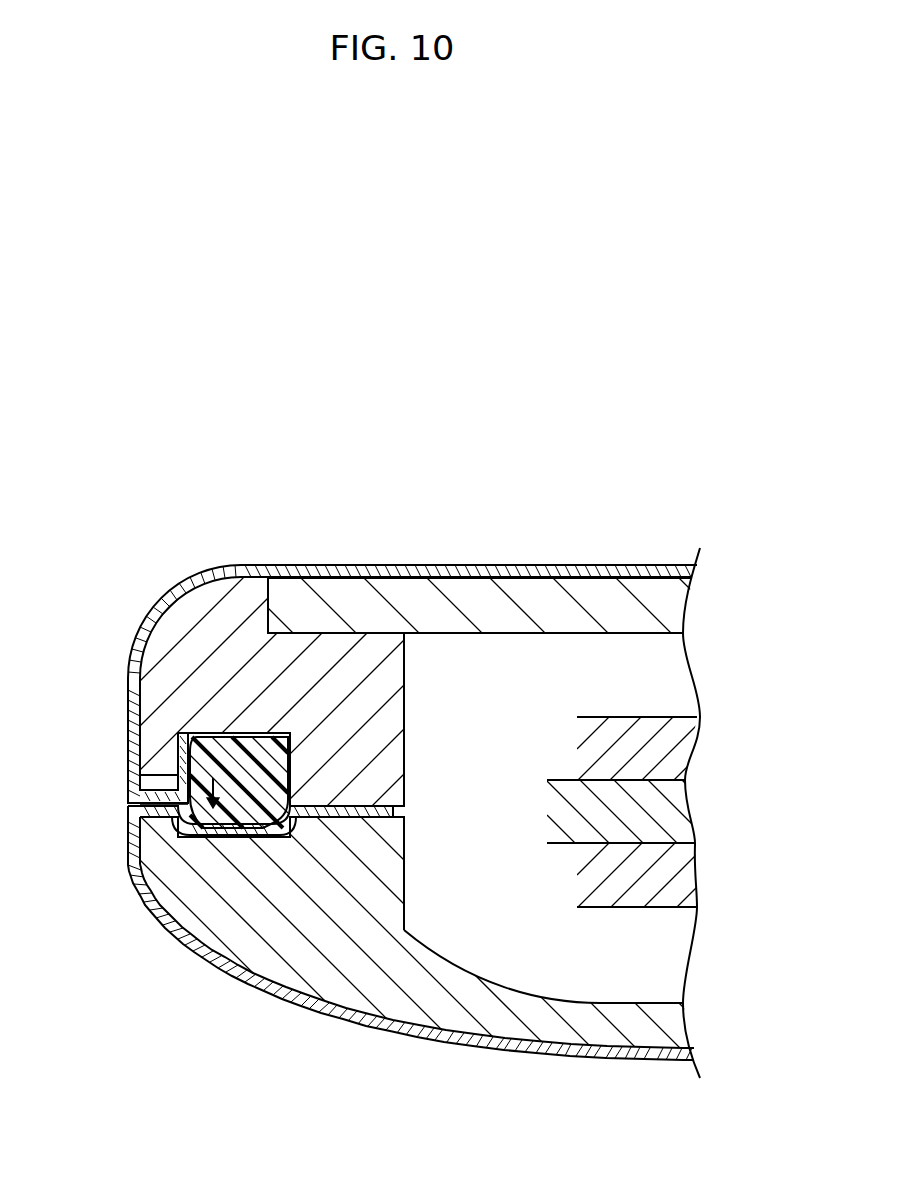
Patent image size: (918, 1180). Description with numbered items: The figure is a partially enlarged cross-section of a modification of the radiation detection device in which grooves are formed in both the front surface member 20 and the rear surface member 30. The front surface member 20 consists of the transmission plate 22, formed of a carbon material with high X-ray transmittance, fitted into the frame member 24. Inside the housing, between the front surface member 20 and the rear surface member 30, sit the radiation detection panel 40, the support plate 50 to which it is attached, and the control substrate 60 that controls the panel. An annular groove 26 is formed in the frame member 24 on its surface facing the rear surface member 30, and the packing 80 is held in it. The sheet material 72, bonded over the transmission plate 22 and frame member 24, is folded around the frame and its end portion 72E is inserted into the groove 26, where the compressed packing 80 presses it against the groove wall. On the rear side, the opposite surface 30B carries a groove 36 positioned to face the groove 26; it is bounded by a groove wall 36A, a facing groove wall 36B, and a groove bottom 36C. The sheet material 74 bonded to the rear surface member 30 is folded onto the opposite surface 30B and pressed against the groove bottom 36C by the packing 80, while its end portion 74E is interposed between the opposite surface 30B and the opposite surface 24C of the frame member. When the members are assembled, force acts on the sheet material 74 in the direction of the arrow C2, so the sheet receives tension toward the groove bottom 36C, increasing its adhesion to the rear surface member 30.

The front surface member 20 is at (418, 645).
The transmission plate 22 is at (370, 578).
The frame member 24 is at (319, 668).
The opposite surface 24C is at (352, 817).
The groove 26 is at (285, 748).
The rear surface member 30 is at (416, 927).
The opposite surface 30B is at (328, 802).
The groove 36 is at (272, 891).
The groove wall 36A is at (192, 838).
The groove wall 36B is at (347, 868).
The groove bottom 36C is at (258, 838).
The radiation detection panel 40 is at (657, 717).
The support plate 50 is at (660, 847).
The control substrate 60 is at (660, 907).
The sheet material 72 is at (374, 640).
The end portion 72E is at (183, 733).
The sheet material 74 is at (411, 911).
The end portion 74E is at (400, 812).
The packing 80 is at (233, 745).
The arrow direction C2 is at (176, 783).